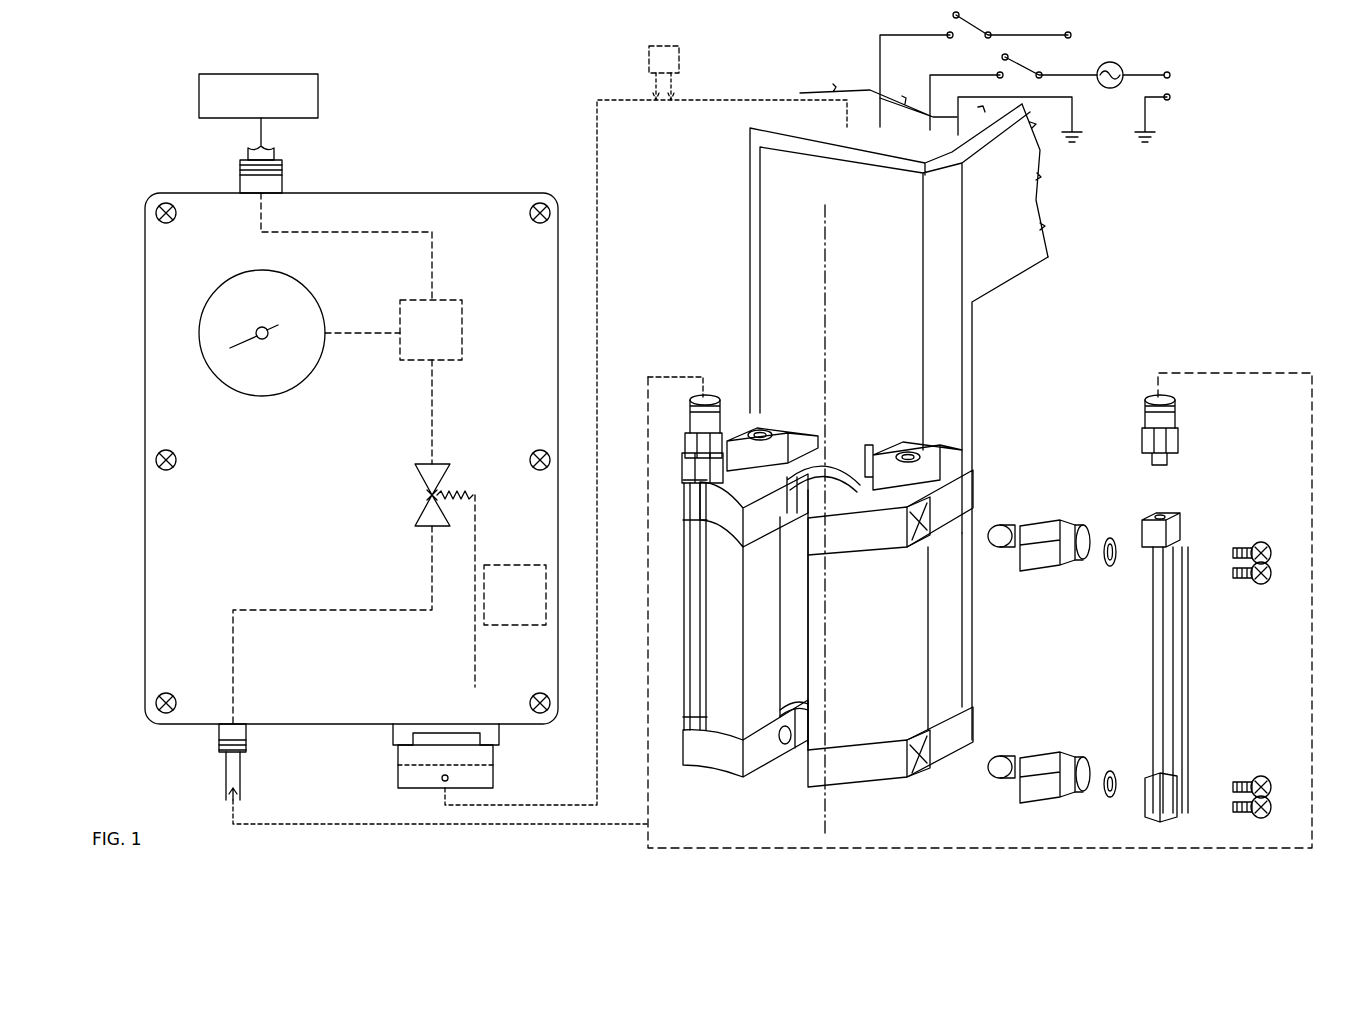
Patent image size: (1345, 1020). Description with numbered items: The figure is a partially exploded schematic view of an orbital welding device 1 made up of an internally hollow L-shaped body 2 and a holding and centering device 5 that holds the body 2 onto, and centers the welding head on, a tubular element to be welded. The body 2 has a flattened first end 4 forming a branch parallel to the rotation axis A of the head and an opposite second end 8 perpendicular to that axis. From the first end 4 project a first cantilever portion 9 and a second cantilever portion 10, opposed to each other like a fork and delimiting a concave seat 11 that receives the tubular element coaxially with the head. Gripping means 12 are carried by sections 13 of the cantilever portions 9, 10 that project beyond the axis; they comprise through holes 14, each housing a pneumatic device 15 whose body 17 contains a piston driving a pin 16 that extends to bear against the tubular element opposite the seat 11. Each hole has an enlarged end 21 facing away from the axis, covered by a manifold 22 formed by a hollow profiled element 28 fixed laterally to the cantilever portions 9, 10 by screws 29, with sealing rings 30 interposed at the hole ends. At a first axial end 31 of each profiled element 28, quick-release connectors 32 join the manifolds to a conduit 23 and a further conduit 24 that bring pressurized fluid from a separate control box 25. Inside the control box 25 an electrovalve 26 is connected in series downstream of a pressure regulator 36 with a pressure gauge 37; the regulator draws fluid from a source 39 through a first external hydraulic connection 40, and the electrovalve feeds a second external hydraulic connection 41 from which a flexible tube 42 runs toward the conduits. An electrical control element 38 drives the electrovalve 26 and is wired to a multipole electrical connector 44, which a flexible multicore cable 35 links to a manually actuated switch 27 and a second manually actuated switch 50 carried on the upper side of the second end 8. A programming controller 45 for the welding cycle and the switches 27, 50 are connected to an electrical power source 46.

The orbital welding device 1 is at (512, 133).
The hollow body 2 is at (995, 298).
The first end 4 is at (770, 340).
The holding and centering device 5 is at (960, 792).
The second end 8 is at (1042, 228).
The first cantilever portion 9 is at (725, 602).
The second cantilever portion 10 is at (860, 600).
The concave seat 11 is at (815, 505).
The gripping means 12 is at (1175, 812).
The sections 13 is at (705, 505).
The through holes 14 is at (935, 525).
The pneumatic device 15 is at (1050, 520).
The pin 16 is at (783, 470).
The body 17 is at (1040, 560).
The end 21 is at (930, 540).
The manifolds 22 is at (1190, 458).
The conduit 23 is at (668, 377).
The conduit 24 is at (660, 838).
The control box 25 is at (140, 378).
The electrovalve 26 is at (420, 508).
The manually actuated switch 27 is at (982, 18).
The profiled elements 28 is at (695, 600).
The screws 29 is at (1272, 553).
The sealing rings 30 is at (1108, 540).
The first axial ends 31 is at (682, 465).
The quick-release connectors 32 is at (705, 400).
The multicore cable 35 is at (659, 102).
The pressure regulator 36 is at (462, 325).
The pressure gauge 37 is at (288, 385).
The electrical control element 38 is at (519, 565).
The source 39 is at (310, 108).
The first external hydraulic connection 40 is at (285, 178).
The second external hydraulic connection 41 is at (244, 728).
The flexible tube 42 is at (228, 768).
The multipole electrical connector 44 is at (488, 757).
The programming controller 45 is at (680, 58).
The electrical power source 46 is at (1133, 63).
The second manually actuated switch 50 is at (1036, 62).